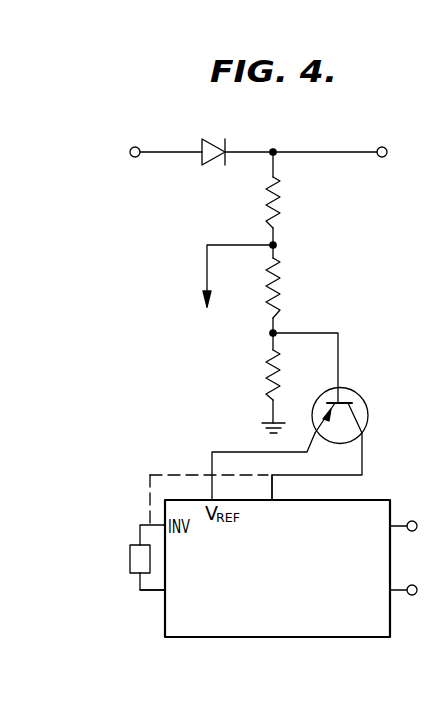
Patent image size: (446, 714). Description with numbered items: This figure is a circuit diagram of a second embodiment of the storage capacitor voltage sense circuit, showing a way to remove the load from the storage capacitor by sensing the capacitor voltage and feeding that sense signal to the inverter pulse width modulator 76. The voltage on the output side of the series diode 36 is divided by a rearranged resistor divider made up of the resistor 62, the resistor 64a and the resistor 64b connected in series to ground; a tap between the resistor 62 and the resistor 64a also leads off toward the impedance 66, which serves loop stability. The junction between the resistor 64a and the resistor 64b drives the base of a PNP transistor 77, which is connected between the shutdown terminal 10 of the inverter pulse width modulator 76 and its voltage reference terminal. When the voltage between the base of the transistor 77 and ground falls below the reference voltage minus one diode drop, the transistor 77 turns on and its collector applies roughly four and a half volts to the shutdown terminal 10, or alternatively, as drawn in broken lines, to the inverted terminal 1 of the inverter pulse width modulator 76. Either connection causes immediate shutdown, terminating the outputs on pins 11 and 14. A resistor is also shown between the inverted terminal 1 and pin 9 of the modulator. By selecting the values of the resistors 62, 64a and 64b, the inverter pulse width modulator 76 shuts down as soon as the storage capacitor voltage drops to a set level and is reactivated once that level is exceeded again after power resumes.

The series diode 36 is at (207, 141).
The resistor 62 is at (280, 214).
The resistor 64a is at (280, 282).
The resistor 64b is at (268, 365).
The impedance 66 is at (228, 288).
The PNP transistor 77 is at (355, 395).
The inverter pulse width modulator 76 is at (293, 574).
The shutdown terminal 10 is at (260, 487).
The inverted terminal 1 is at (147, 557).
The terminal 9 is at (152, 603).
The output pin 11 is at (403, 516).
The output pin 14 is at (403, 580).